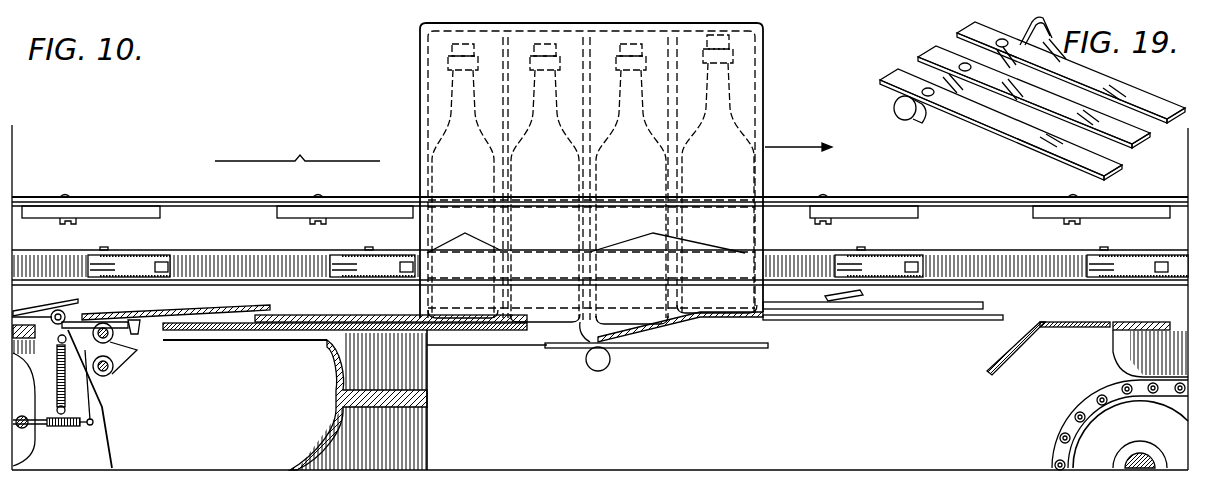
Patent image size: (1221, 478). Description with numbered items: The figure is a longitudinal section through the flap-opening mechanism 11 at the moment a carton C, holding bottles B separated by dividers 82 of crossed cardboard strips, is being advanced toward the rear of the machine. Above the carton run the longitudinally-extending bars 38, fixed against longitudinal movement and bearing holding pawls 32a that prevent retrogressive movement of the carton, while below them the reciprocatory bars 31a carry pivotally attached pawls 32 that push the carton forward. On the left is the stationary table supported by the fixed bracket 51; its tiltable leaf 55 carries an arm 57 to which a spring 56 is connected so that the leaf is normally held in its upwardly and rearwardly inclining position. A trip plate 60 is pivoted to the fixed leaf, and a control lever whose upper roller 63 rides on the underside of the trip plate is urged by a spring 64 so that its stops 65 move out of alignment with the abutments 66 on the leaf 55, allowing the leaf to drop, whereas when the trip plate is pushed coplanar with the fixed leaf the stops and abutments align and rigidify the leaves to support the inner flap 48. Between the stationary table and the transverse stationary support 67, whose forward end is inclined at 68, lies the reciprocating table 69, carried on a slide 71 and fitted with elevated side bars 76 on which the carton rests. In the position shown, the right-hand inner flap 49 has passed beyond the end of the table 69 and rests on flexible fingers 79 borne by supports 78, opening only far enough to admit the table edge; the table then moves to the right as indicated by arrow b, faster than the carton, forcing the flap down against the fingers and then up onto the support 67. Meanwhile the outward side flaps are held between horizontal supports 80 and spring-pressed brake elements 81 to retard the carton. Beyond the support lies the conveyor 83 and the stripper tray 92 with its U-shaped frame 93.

In FIG. 10, the flap-opening mechanism 11 is at (297, 145).
In FIG. 10, the longitudinally-extending bars 38 is at (153, 198).
In FIG. 10, the holding pawls 32a is at (358, 208).
In FIG. 10, the bars 31a is at (170, 268).
In FIG. 10, the pawls 32 is at (382, 268).
In FIG. 10, the roller 63 is at (62, 310).
In FIG. 10, the trip plate 60 is at (58, 310).
In FIG. 10, the arm 57 is at (80, 330).
In FIG. 10, the abutments 66 is at (140, 333).
In FIG. 10, the stops 65 is at (130, 360).
In FIG. 10, the fixed bracket 51 is at (112, 458).
In FIG. 10, the spring 56 is at (58, 388).
In FIG. 10, the spring 64 is at (70, 432).
In FIG. 10, the tiltable leaf 55 is at (230, 306).
In FIG. 10, the side bars 76 is at (283, 316).
In FIG. 10, the inner flap 48 is at (366, 320).
In FIG. 10, the reciprocating table 69 is at (250, 331).
In FIG. 10, the slide 71 is at (430, 436).
In FIG. 10, the carton C is at (763, 52).
In FIG. 10, the dividers 82 is at (418, 38).
In FIG. 10, the bottles B is at (476, 282).
In FIG. 10, the arrow b is at (798, 135).
In FIG. 10, the inner flap 49 is at (680, 333).
In FIG. 10, the flexible fingers 79 is at (748, 350).
In FIG. 19, the flexible fingers 79 is at (880, 80).
In FIG. 10, the supports 78 is at (598, 371).
In FIG. 19, the supports 78 is at (915, 122).
In FIG. 10, the spring-pressed brake elements 81 is at (985, 307).
In FIG. 10, the horizontal supports 80 is at (878, 320).
In FIG. 10, the U shaped frame 93 is at (1130, 322).
In FIG. 10, the stripper tray 92 is at (1128, 367).
In FIG. 10, the transverse stationary support 67 is at (1072, 328).
In FIG. 10, the inclined forward end 68 is at (1008, 365).
In FIG. 10, the conveyor 83 is at (1058, 445).